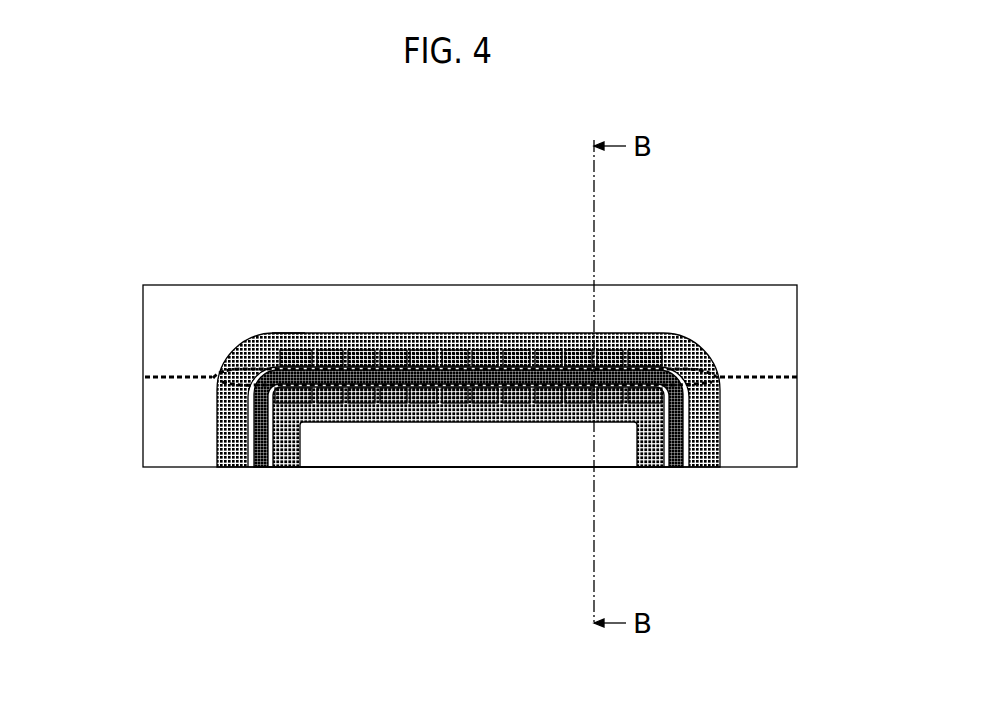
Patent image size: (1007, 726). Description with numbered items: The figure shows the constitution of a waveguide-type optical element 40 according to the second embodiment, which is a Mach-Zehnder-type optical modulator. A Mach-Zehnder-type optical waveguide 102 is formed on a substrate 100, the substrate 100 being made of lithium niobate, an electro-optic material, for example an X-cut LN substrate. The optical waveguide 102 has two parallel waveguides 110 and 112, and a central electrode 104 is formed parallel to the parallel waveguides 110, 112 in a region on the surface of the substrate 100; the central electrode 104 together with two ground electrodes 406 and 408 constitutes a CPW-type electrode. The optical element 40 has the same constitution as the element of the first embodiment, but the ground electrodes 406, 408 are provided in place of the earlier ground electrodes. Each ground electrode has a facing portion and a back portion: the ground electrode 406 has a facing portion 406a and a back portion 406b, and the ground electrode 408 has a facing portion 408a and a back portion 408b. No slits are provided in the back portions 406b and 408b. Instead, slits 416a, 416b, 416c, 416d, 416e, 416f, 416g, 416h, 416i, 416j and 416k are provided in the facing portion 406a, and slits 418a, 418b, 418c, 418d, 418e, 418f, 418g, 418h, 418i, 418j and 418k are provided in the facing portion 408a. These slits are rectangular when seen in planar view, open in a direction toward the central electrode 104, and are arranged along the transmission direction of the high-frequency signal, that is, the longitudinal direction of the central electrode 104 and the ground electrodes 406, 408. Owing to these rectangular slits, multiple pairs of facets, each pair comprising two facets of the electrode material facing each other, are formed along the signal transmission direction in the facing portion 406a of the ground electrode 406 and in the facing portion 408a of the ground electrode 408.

The waveguide-type optical element 40 is at (173, 195).
The substrate 100 is at (155, 285).
The Mach-Zehnder-type optical waveguide 102 is at (162, 373).
The central electrode 104 is at (283, 333).
The parallel waveguide 110 is at (252, 345).
The parallel waveguide 112 is at (250, 385).
The ground electrode 406 is at (755, 238).
The facing portion 406a is at (662, 342).
The back portion 406b is at (640, 350).
The slit 416a is at (314, 360).
The slit 416b is at (345, 360).
The slit 416c is at (377, 360).
The slit 416d is at (408, 360).
The slit 416e is at (440, 360).
The slit 416f is at (471, 360).
The slit 416g is at (503, 360).
The slit 416h is at (534, 360).
The slit 416i is at (566, 360).
The slit 416j is at (597, 360).
The slit 416k is at (628, 360).
The ground electrode 408 is at (755, 516).
The facing portion 408a is at (675, 410).
The back portion 408b is at (650, 406).
The slit 418a is at (318, 397).
The slit 418b is at (350, 397).
The slit 418c is at (381, 397).
The slit 418d is at (412, 397).
The slit 418e is at (444, 397).
The slit 418f is at (475, 397).
The slit 418g is at (507, 397).
The slit 418h is at (538, 397).
The slit 418i is at (570, 397).
The slit 418j is at (600, 397).
The slit 418k is at (632, 408).